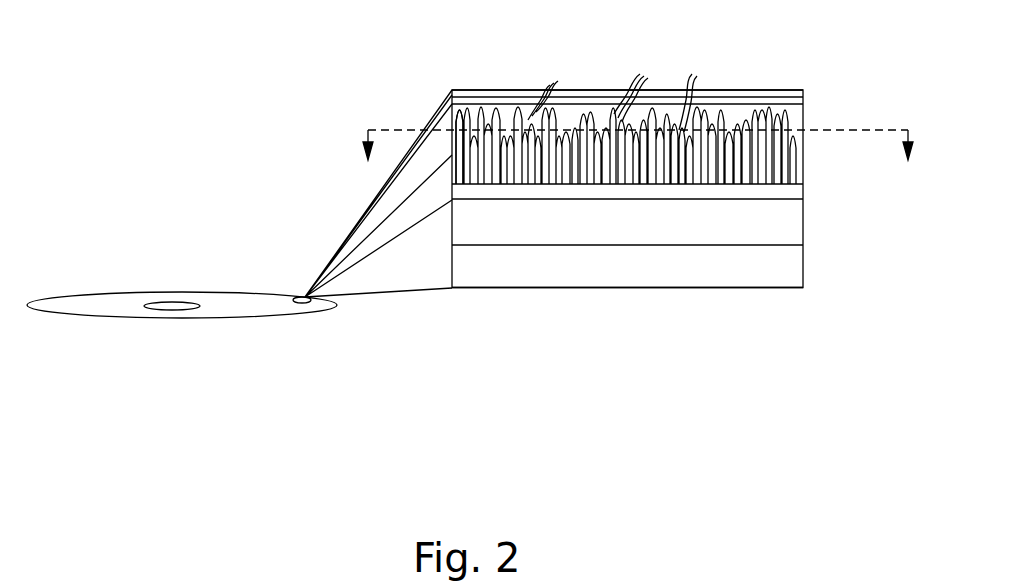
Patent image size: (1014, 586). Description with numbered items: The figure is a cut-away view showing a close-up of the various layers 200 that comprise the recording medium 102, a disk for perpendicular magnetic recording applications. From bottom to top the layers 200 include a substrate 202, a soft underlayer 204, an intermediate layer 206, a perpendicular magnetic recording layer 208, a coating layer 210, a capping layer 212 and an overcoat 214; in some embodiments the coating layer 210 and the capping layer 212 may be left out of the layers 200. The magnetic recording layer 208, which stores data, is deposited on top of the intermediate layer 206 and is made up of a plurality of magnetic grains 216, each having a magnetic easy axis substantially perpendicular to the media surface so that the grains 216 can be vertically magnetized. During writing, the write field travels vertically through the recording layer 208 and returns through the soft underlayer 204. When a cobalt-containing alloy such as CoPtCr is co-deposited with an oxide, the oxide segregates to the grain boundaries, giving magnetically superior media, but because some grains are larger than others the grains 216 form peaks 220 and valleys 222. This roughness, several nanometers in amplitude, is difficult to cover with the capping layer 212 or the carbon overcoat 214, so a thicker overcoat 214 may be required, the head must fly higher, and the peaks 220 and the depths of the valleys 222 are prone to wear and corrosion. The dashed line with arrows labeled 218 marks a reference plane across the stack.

The recording medium 102 is at (140, 292).
The layers 200 is at (621, 163).
The substrate 202 is at (657, 280).
The soft underlayer 204 is at (804, 237).
The intermediate layer 206 is at (804, 195).
The perpendicular magnetic recording layer 208 is at (804, 157).
The coating layer 210 is at (797, 130).
The capping layer 212 is at (795, 102).
The overcoat 214 is at (793, 93).
The magnetic grains 216 is at (527, 126).
The cross-section reference plane 218 is at (641, 158).
The peaks 220 is at (646, 89).
The valleys 222 is at (701, 93).